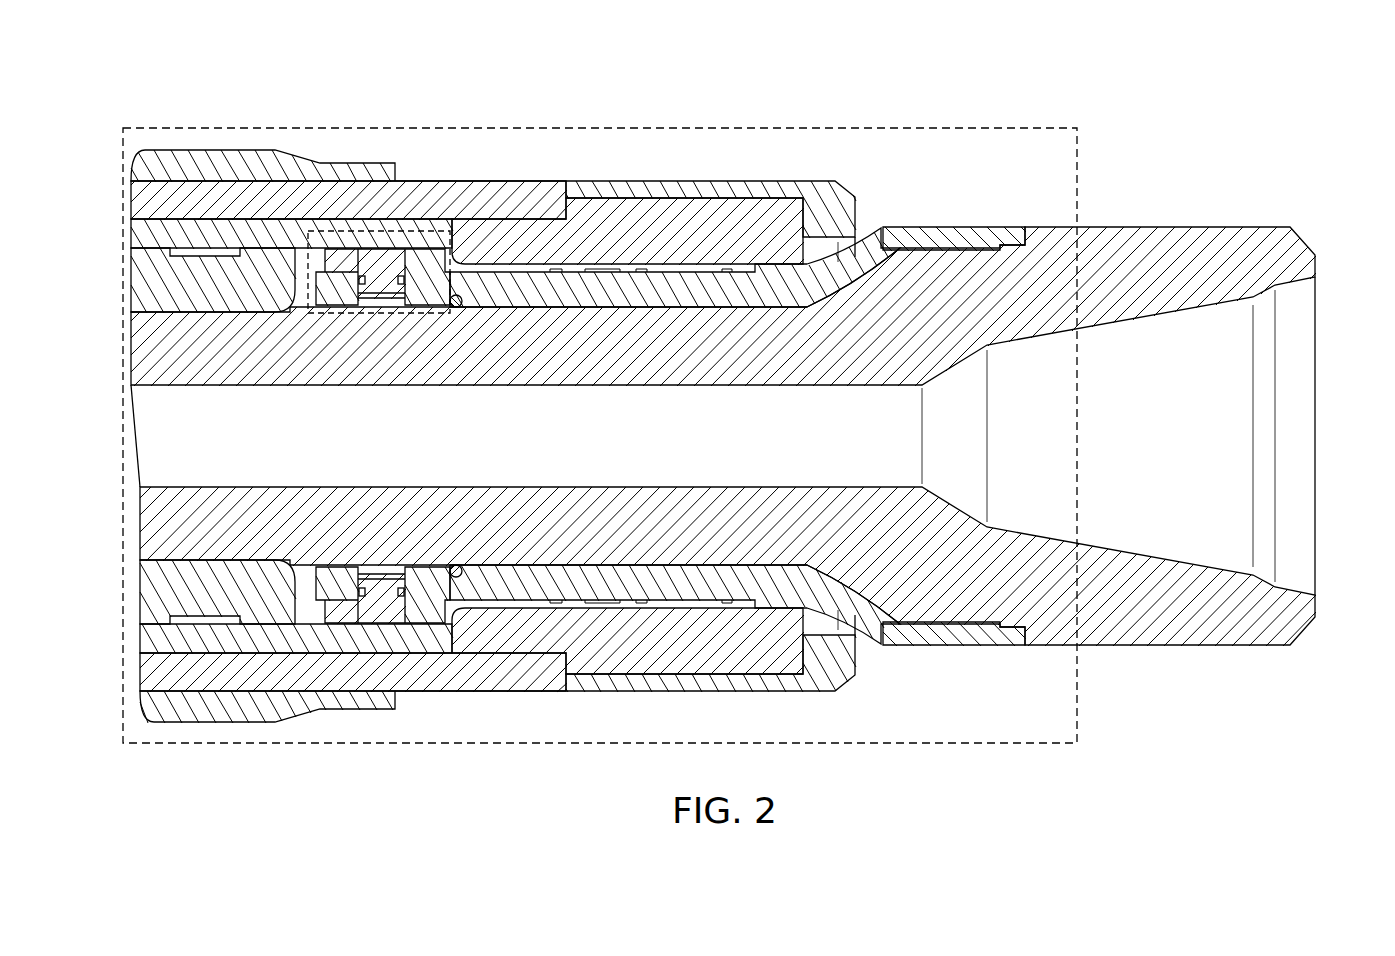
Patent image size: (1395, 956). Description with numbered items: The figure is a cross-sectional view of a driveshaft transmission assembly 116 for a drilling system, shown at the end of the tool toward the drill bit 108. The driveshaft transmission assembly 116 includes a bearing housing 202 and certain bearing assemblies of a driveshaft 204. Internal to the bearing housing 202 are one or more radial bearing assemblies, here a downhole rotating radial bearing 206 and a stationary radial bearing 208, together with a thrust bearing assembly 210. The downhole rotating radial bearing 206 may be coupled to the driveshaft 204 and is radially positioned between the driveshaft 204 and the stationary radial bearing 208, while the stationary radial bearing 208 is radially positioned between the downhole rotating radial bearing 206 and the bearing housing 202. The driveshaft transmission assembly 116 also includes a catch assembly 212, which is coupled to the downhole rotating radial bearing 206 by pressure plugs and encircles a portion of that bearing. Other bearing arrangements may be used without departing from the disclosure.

The driveshaft transmission assembly 116 is at (176, 127).
The bearing housing 202 is at (476, 190).
The driveshaft 204 is at (1192, 233).
The downhole rotating radial bearing 206 is at (957, 232).
The stationary radial bearing 208 is at (748, 226).
The thrust bearing assembly 210 is at (148, 290).
The catch assembly 212 is at (398, 225).
The drill bit 108 is at (1310, 455).